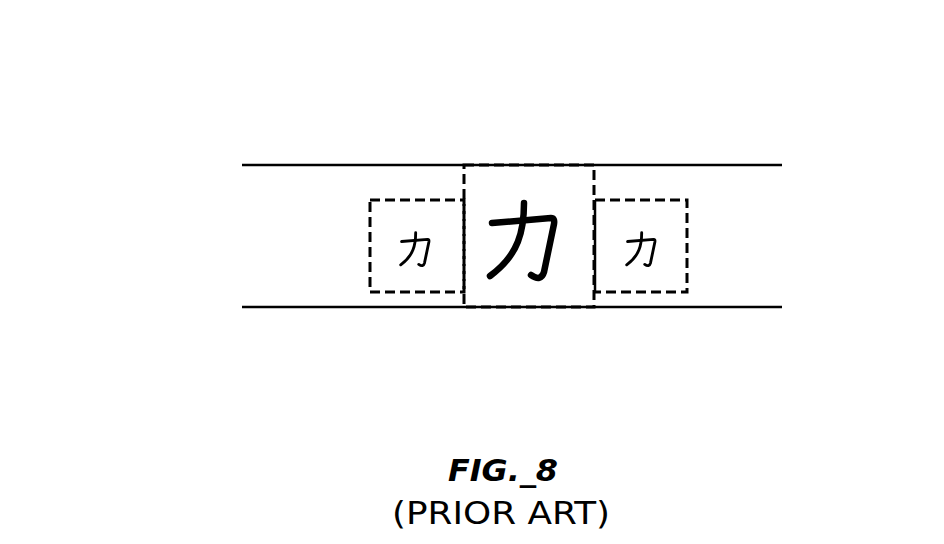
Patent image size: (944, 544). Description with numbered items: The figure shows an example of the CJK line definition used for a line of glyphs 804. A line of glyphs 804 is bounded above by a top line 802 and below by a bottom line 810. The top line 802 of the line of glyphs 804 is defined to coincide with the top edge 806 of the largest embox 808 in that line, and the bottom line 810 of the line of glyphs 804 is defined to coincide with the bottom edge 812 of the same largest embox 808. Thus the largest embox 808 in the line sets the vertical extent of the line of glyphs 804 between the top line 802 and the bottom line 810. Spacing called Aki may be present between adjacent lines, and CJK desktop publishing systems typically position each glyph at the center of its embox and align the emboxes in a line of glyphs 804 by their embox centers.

The top line 802 is at (275, 165).
The line of glyphs 804 is at (205, 165).
The top edge 806 is at (594, 147).
The largest embox 808 is at (593, 183).
The bottom line 810 is at (275, 307).
The bottom edge 812 is at (592, 328).